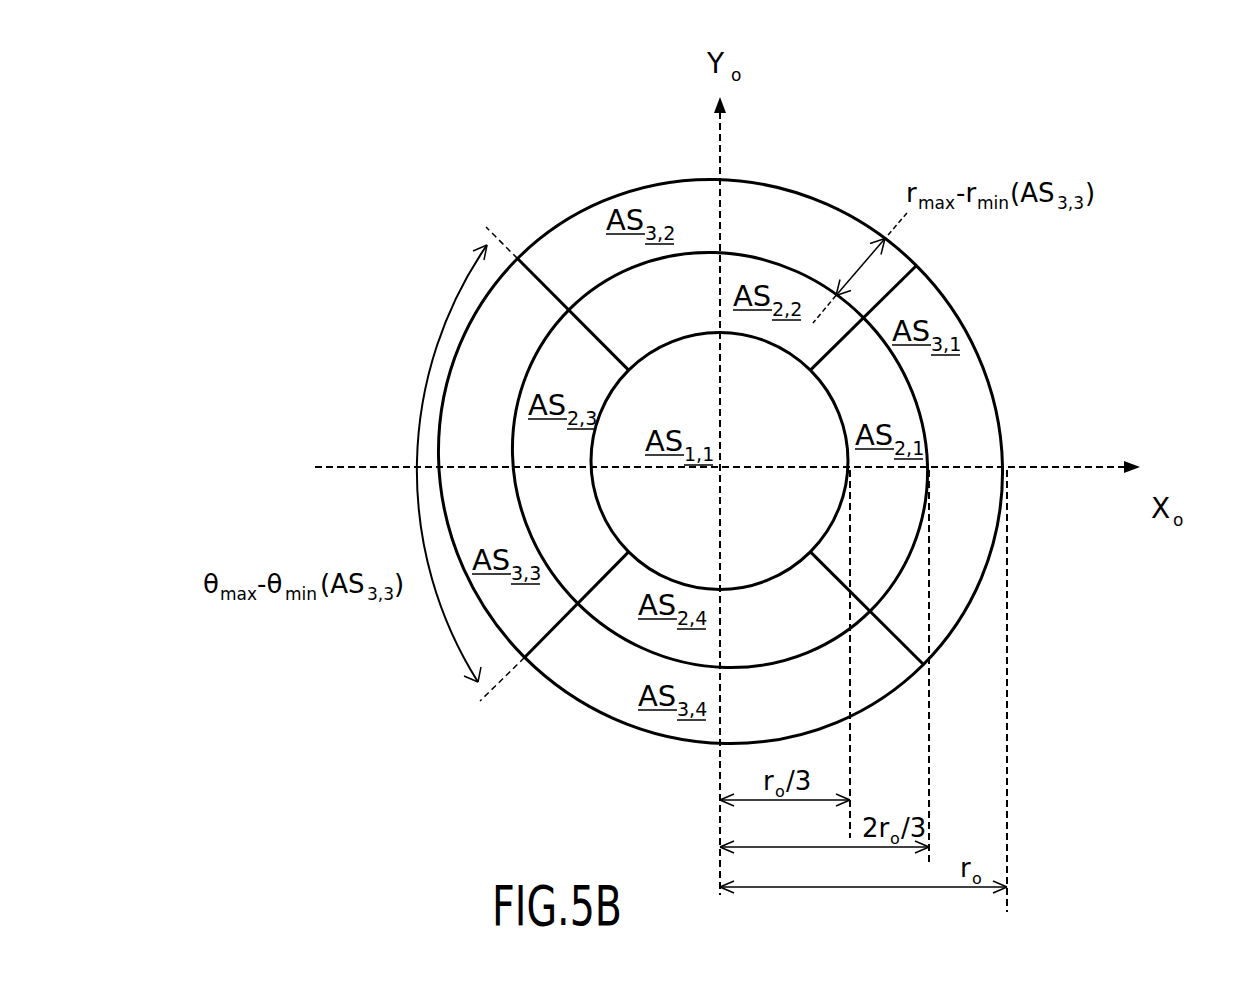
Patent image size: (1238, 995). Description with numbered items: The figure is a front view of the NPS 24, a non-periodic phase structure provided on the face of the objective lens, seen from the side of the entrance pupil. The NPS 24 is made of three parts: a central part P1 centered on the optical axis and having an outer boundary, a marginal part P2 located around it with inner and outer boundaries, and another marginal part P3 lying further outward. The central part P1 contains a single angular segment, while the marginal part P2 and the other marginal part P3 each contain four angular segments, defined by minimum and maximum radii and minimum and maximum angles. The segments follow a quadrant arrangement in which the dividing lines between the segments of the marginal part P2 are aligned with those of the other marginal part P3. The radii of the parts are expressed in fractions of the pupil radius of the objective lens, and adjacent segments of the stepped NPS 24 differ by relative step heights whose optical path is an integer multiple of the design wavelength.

The NPS 24 is at (721, 462).
The central part P1 is at (663, 378).
The marginal part P2 is at (699, 300).
The another marginal part P3 is at (385, 258).